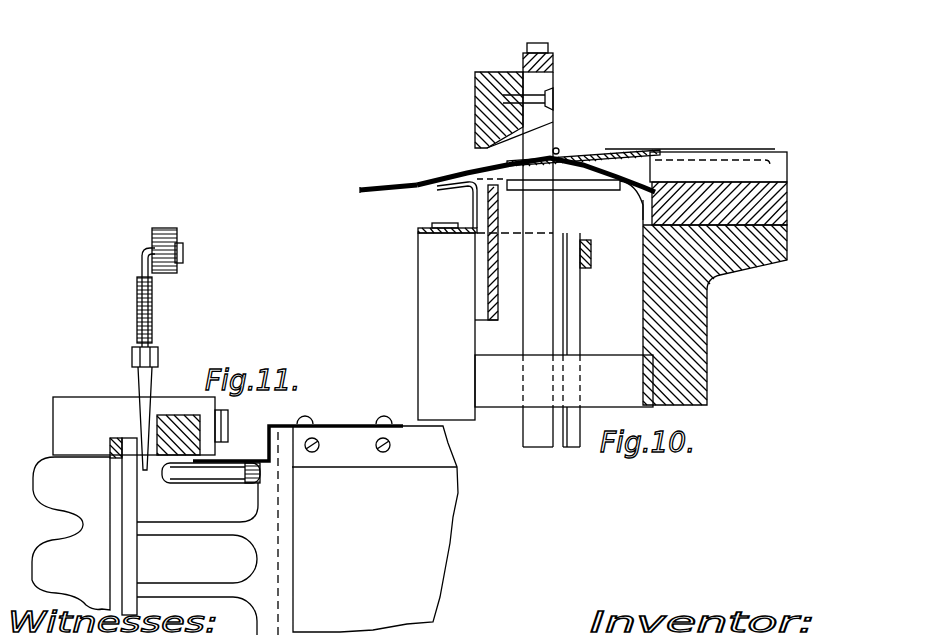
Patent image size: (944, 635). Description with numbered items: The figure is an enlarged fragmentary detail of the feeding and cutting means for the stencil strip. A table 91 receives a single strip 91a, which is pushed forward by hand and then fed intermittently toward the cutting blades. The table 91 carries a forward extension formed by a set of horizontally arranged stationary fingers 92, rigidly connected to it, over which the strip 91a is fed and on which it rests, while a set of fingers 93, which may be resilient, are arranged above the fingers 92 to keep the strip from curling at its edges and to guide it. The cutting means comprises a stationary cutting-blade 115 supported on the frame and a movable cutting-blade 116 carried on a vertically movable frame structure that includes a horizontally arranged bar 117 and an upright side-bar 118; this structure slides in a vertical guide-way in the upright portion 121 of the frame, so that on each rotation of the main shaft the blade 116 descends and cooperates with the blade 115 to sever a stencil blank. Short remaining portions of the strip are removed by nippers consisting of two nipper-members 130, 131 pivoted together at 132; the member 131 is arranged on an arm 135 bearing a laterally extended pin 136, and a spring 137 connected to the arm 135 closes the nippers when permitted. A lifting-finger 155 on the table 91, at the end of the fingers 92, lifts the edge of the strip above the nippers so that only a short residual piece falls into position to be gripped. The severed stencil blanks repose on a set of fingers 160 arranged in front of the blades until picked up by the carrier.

In FIG. 10, the table 91 is at (723, 182).
In FIG. 11, the table 91 is at (437, 517).
In FIG. 10, the strip 91a is at (391, 173).
In FIG. 10, the fingers 92 is at (597, 190).
In FIG. 11, the fingers 92 is at (227, 532).
In FIG. 10, the fingers 93 is at (527, 160).
In FIG. 10, the cutting-blade 115 is at (487, 247).
In FIG. 10, the cutting-blade 116 is at (475, 125).
In FIG. 10, the horizontally arranged bar 117 is at (498, 72).
In FIG. 10, the upright side-bar 118 is at (540, 272).
In FIG. 11, the upright side-bar 118 is at (177, 415).
In FIG. 10, the upright portion 121 is at (568, 336).
In FIG. 11, the upright portion 121 is at (82, 410).
In FIG. 10, the nipper-member 130 is at (485, 171).
In FIG. 11, the nipper-member 130 is at (143, 392).
In FIG. 10, the nipper-member 131 is at (510, 190).
In FIG. 11, the pivot 132 is at (158, 355).
In FIG. 11, the arm 135 is at (142, 268).
In FIG. 11, the laterally extended pin 136 is at (177, 245).
In FIG. 11, the spring 137 is at (137, 308).
In FIG. 10, the lifting-finger 155 is at (580, 166).
In FIG. 11, the lifting-finger 155 is at (218, 476).
In FIG. 10, the fingers 160 is at (420, 198).
In FIG. 11, the fingers 160 is at (84, 526).